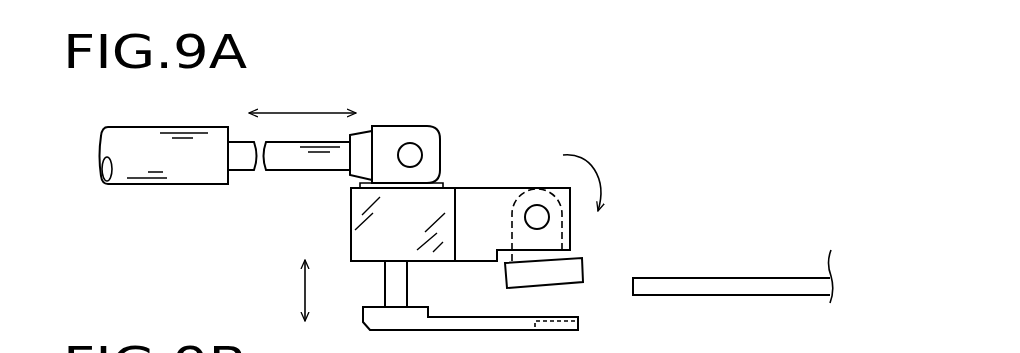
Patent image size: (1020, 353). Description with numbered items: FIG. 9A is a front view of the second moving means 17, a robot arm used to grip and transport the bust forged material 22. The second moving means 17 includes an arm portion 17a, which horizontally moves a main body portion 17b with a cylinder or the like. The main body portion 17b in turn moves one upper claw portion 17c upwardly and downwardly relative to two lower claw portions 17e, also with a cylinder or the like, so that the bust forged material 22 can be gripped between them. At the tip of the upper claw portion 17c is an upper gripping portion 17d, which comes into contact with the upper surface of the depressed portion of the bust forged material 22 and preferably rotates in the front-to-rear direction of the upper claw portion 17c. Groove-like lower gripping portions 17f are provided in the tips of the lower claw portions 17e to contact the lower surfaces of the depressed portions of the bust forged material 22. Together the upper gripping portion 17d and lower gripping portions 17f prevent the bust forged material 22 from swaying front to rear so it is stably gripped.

The second moving means 17 is at (541, 132).
The arm portion 17a is at (140, 133).
The main body portion 17b is at (392, 293).
The upper claw portion 17c is at (480, 197).
The upper gripping portion 17d is at (583, 266).
The lower claw portions 17e is at (524, 327).
The lower gripping portions 17f is at (571, 313).
The bust forged material 22 is at (753, 287).